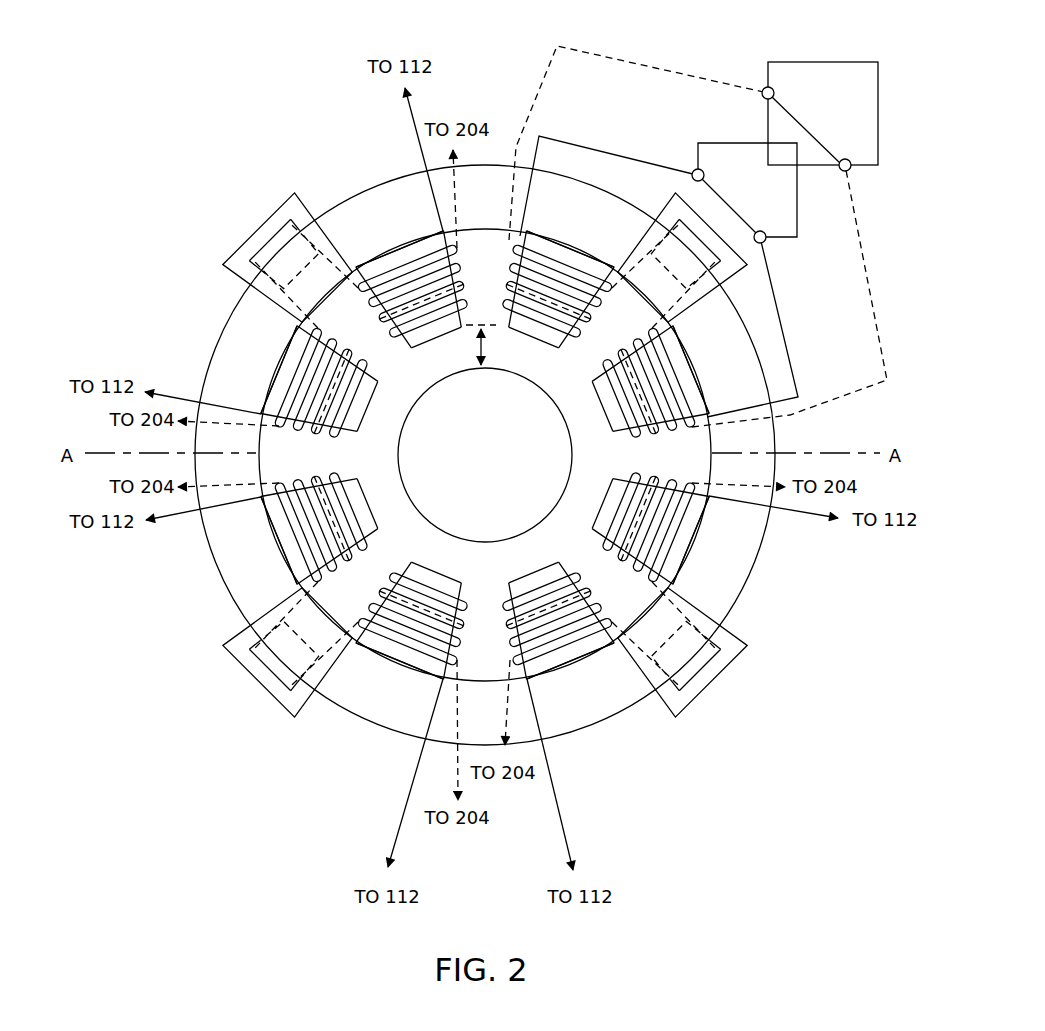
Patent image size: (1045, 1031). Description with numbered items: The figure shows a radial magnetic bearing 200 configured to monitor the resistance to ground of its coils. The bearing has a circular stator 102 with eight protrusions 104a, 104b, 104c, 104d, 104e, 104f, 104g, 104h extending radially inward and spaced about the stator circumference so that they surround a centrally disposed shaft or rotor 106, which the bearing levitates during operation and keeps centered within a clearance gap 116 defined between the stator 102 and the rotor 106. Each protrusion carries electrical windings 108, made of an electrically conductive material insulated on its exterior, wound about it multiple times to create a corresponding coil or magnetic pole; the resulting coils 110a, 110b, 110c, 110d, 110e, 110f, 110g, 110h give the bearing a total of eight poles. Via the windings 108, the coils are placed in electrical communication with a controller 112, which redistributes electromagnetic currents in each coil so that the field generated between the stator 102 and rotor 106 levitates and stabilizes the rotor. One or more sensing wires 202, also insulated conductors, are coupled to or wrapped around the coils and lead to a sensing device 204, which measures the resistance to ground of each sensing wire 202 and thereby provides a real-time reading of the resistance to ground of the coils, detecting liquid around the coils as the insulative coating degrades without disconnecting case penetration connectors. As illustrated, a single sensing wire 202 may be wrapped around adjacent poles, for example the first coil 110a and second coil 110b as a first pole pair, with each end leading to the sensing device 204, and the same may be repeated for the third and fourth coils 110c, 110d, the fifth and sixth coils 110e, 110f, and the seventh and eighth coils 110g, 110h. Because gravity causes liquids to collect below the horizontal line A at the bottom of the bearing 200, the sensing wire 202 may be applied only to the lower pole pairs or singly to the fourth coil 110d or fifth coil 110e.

The radial magnetic bearing 200 is at (204, 197).
The stator 102 is at (457, 455).
The protrusion 104a is at (517, 236).
The protrusion 104b is at (592, 416).
The protrusion 104c is at (600, 492).
The protrusion 104d is at (525, 568).
The protrusion 104e is at (448, 576).
The protrusion 104f is at (357, 477).
The protrusion 104g is at (372, 418).
The protrusion 104h is at (440, 337).
The rotor 106 is at (472, 444).
The electrical windings 108 is at (420, 250).
The first coil 110a is at (543, 283).
The second coil 110b is at (646, 376).
The third coil 110c is at (656, 517).
The fourth coil 110d is at (563, 624).
The fifth coil 110e is at (423, 625).
The sixth coil 110f is at (319, 536).
The seventh coil 110g is at (371, 390).
The eighth coil 110h is at (403, 287).
The controller 112 is at (736, 188).
The clearance gap 116 is at (473, 344).
The sensing wire 202 is at (675, 70).
The sensing device 204 is at (818, 106).